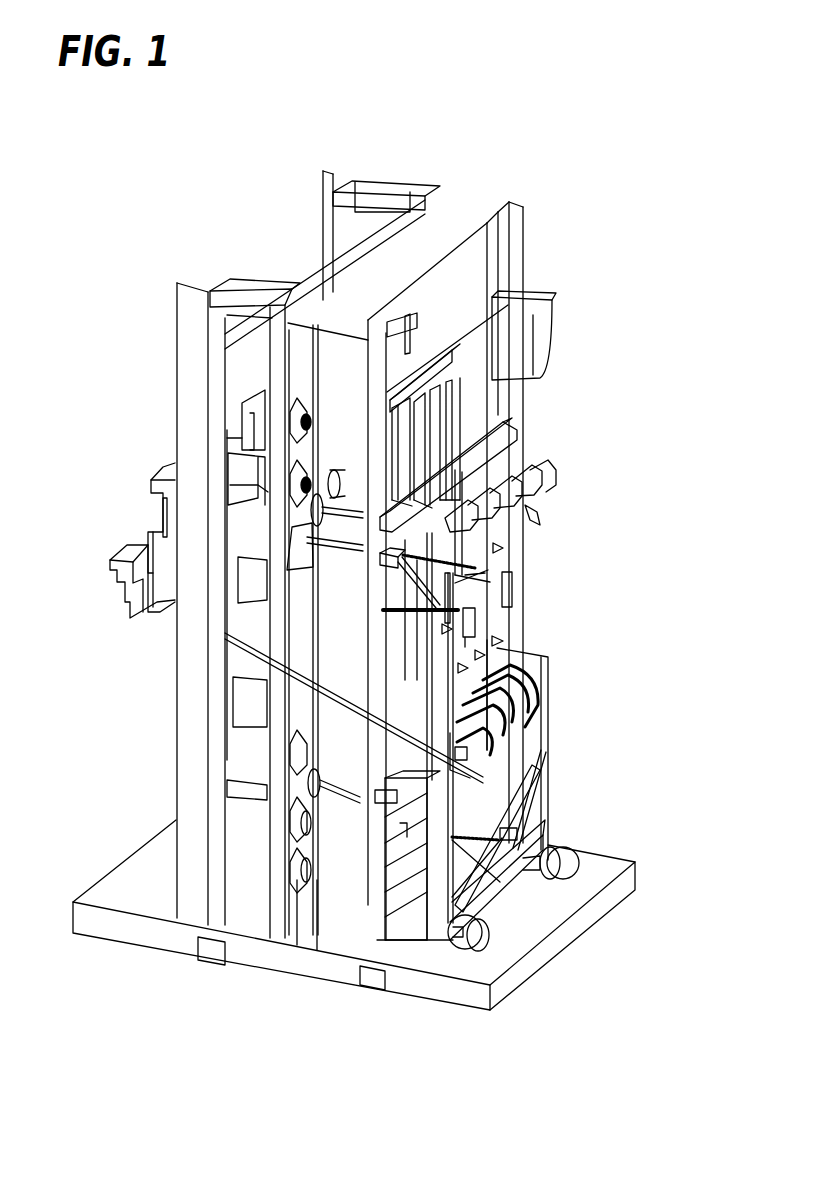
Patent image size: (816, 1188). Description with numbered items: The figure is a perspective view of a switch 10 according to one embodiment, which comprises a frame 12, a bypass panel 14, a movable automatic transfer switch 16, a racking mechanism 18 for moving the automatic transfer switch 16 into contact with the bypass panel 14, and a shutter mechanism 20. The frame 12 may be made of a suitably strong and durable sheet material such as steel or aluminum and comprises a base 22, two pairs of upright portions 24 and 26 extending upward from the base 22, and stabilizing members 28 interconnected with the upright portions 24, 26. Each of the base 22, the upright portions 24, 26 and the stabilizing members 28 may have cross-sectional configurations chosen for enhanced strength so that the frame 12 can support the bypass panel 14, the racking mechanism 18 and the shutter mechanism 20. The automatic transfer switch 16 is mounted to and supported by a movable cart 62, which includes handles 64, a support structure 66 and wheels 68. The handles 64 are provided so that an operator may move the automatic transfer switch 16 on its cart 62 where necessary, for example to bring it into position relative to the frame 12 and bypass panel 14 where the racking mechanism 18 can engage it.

The switch 10 is at (137, 452).
The frame 12 is at (447, 217).
The bypass panel 14 is at (174, 456).
The automatic transfer switch 16 is at (490, 640).
The racking mechanism 18 is at (288, 577).
The shutter mechanism 20 is at (432, 372).
The base 22 is at (593, 862).
The upright portions 24 is at (448, 293).
The upright portions 26 is at (322, 170).
The stabilizing members 28 is at (335, 182).
The movable cart 62 is at (550, 773).
The handles 64 is at (457, 590).
The support structure 66 is at (544, 733).
The wheels 68 is at (473, 930).